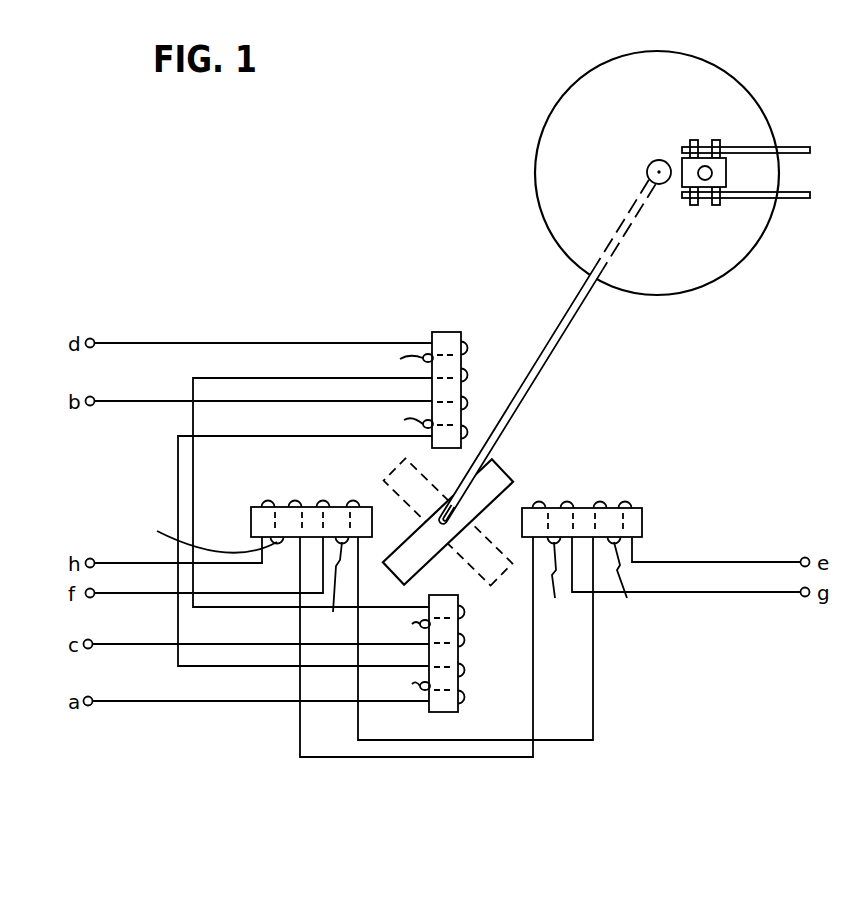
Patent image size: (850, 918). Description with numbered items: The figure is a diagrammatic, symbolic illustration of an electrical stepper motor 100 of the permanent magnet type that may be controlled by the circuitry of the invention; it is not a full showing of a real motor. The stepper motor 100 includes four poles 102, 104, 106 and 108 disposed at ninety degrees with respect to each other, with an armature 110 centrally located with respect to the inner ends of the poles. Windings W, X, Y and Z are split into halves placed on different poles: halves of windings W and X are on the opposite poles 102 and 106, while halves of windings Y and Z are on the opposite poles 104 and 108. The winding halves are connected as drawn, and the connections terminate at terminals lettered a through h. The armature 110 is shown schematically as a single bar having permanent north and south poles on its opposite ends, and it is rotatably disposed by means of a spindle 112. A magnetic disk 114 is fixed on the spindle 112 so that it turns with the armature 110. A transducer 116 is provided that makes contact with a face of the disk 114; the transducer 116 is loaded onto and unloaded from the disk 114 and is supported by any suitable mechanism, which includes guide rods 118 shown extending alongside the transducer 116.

The electrical stepper motor 100 is at (621, 394).
The pole 102 is at (444, 332).
The pole 104 is at (250, 523).
The pole 106 is at (443, 712).
The pole 108 is at (643, 521).
The armature 110 is at (506, 461).
The spindle 112 is at (578, 320).
The magnetic disk 114 is at (631, 119).
The transducer 116 is at (681, 184).
The guide rods 118 is at (799, 146).